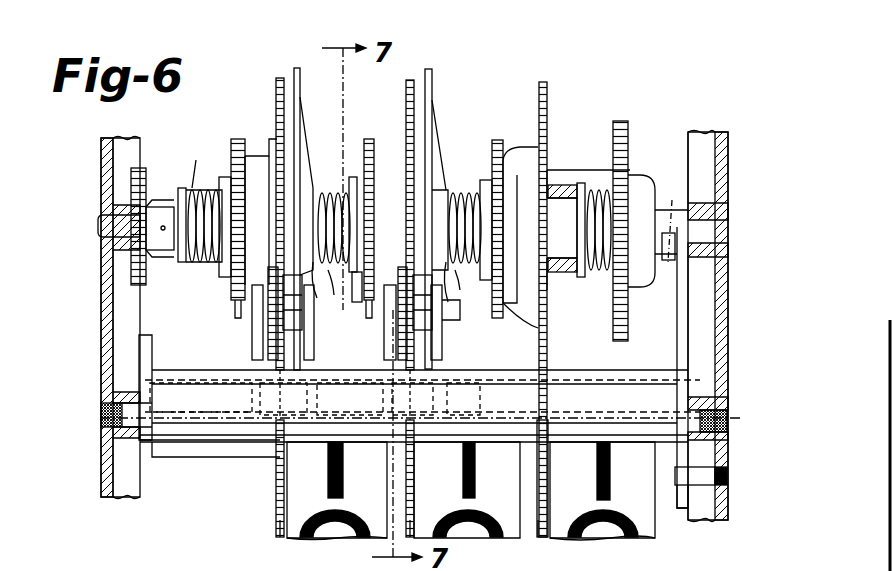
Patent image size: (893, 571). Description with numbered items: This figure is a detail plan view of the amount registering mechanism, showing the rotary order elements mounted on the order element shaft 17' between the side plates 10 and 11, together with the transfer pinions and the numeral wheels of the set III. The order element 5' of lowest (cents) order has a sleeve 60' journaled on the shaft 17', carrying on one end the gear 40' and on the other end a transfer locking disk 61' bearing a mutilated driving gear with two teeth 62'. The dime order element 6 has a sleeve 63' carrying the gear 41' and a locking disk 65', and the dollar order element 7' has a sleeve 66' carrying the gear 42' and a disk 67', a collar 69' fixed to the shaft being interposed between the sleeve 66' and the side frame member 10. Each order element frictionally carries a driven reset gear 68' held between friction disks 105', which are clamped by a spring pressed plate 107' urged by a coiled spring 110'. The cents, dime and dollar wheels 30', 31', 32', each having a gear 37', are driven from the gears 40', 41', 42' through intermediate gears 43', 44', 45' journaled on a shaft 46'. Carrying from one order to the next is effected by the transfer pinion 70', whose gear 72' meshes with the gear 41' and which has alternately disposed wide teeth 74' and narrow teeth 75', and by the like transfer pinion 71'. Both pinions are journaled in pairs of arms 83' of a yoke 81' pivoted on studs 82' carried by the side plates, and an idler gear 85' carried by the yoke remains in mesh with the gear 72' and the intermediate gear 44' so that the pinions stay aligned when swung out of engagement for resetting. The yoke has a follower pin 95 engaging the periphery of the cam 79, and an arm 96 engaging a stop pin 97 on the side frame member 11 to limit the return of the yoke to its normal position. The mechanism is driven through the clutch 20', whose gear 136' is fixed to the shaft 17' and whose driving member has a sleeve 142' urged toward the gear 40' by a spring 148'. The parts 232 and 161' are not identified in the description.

The side frame member 10 is at (101, 337).
The side frame member 11 is at (728, 136).
The order element shaft 17' is at (99, 226).
The gear 232 is at (131, 278).
The collar 69' is at (160, 214).
The disk 67' is at (168, 241).
The sleeve 66' is at (198, 244).
The coiled spring 110' is at (205, 249).
The order element 7' is at (201, 165).
The spring pressed plate 107' is at (359, 197).
The driven reset gear 68' is at (380, 213).
The gear 42' is at (264, 248).
The locking disk 65' is at (313, 219).
The order element 6 is at (329, 186).
The gear 41' is at (392, 250).
The transfer locking disk 61' is at (444, 214).
The mutilated driving gear 62' is at (447, 199).
The order element 5' is at (465, 207).
The gear 40' is at (529, 298).
The clutch 20' is at (588, 209).
The friction disks 105' is at (524, 237).
The bearing 161' is at (570, 212).
The sleeve 142' is at (598, 219).
The gear 136' is at (627, 217).
The cam 79 is at (675, 222).
The follower pin 95 is at (668, 262).
The sleeve 63' is at (337, 241).
The narrow teeth 75' is at (459, 282).
The transfer pinion 70' is at (458, 310).
The sleeve 60' is at (484, 252).
The spring 148' is at (591, 247).
The gear 72' is at (314, 313).
The transfer pinion 71' is at (313, 302).
The arms 83' is at (349, 324).
The wide teeth 74' is at (443, 312).
The yoke 81' is at (420, 388).
The idler gear 85' is at (315, 389).
The studs 82' is at (411, 417).
The shaft 46' is at (210, 458).
The intermediate gear 45' is at (257, 478).
The intermediate gear 44' is at (427, 478).
The intermediate gear 43' is at (558, 478).
The gear 37' is at (389, 524).
The dollar wheel 32' is at (337, 501).
The dime wheel 31' is at (467, 506).
The cents wheel 30' is at (602, 506).
The set of numeral wheels III is at (617, 540).
The stop pin 97 is at (728, 476).
The arm 96 is at (680, 500).